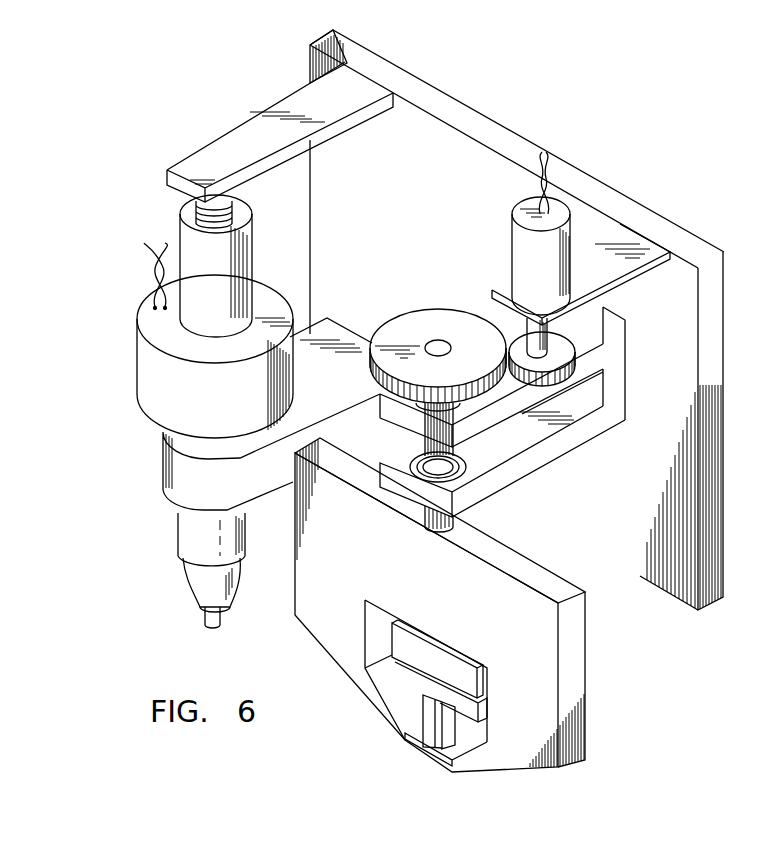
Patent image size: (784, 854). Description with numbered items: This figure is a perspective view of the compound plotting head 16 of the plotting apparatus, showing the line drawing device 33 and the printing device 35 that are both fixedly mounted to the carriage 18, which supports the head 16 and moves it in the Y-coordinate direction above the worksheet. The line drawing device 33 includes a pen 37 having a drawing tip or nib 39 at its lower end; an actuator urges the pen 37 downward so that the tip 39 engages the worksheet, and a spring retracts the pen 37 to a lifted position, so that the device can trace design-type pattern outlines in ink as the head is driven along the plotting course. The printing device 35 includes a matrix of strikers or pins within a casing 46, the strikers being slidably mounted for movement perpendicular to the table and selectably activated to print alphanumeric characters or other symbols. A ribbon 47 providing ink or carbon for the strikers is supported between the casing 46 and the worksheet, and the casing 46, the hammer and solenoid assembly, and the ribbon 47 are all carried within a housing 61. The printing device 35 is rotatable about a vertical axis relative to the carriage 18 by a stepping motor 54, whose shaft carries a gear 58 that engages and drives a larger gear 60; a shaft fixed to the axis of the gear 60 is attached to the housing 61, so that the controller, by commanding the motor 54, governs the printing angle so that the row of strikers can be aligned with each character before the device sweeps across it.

The compound plotting head 16 is at (574, 150).
The carriage 18 is at (680, 386).
The line drawing device 33 is at (133, 424).
The printing device 35 is at (599, 629).
The pen 37 is at (174, 573).
The drawing tip 39 is at (221, 626).
The casing 46 is at (432, 727).
The ribbon 47 is at (415, 747).
The stepping motor 54 is at (562, 266).
The gear 58 is at (553, 345).
The gear 60 is at (435, 330).
The housing 61 is at (545, 703).